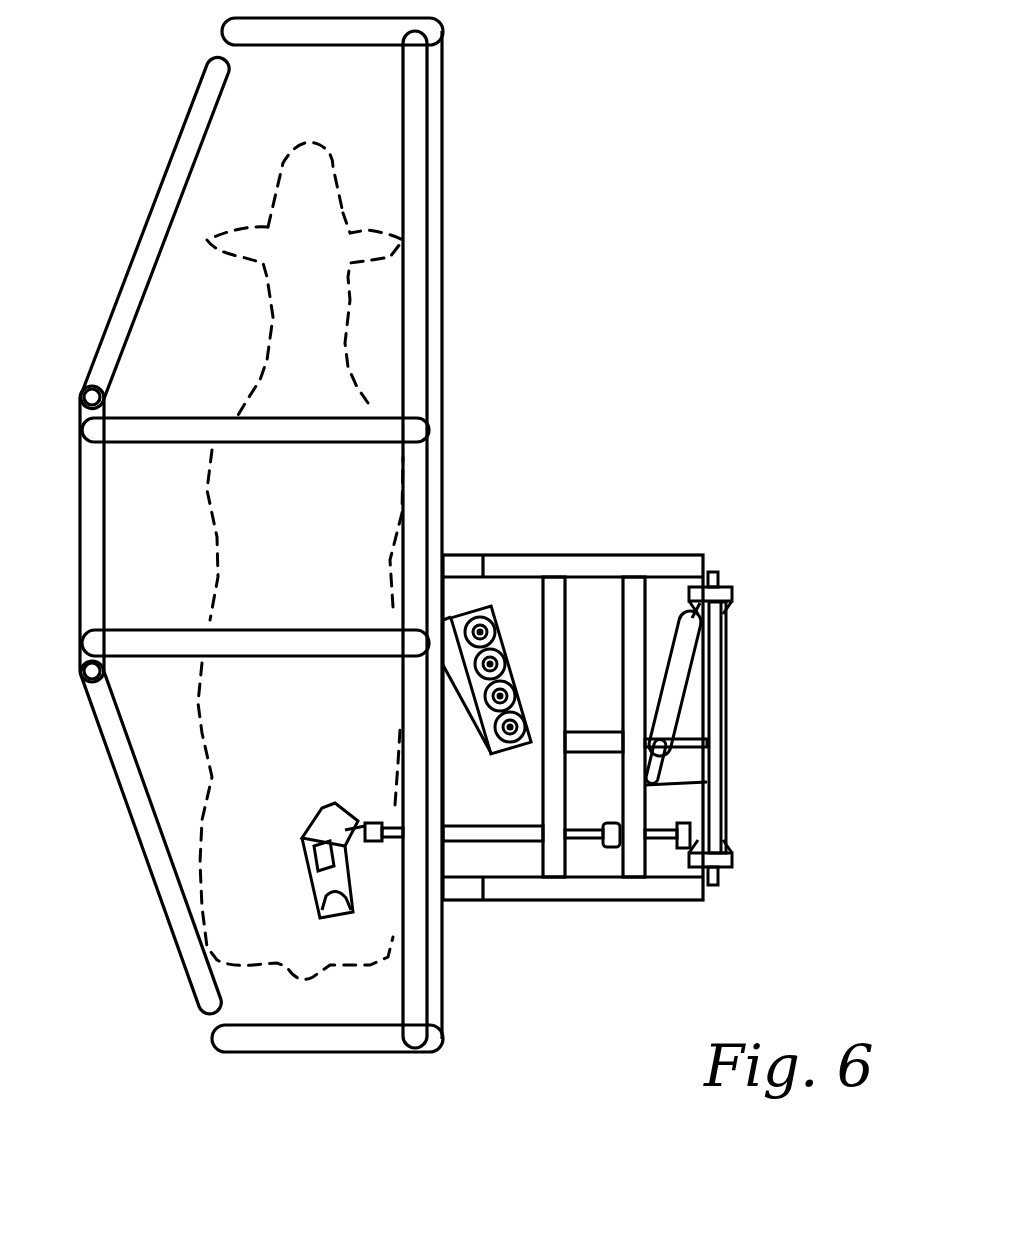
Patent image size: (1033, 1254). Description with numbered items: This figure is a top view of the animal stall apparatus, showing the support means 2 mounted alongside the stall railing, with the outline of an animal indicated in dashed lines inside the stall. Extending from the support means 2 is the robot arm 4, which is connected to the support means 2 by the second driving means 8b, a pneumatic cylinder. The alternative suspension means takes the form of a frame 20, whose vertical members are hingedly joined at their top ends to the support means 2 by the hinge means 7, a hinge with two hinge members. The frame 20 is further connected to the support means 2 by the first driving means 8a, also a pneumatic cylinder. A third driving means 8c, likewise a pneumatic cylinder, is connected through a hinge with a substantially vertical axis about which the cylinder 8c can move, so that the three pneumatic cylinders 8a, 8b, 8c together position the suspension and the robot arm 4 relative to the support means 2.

The support means 2 is at (558, 567).
The robot arm 4 is at (497, 841).
The hinge means 7 is at (720, 587).
The first driving means 8a is at (600, 752).
The second driving means 8b is at (603, 847).
The third driving means 8c is at (673, 708).
The frame 20 is at (748, 661).